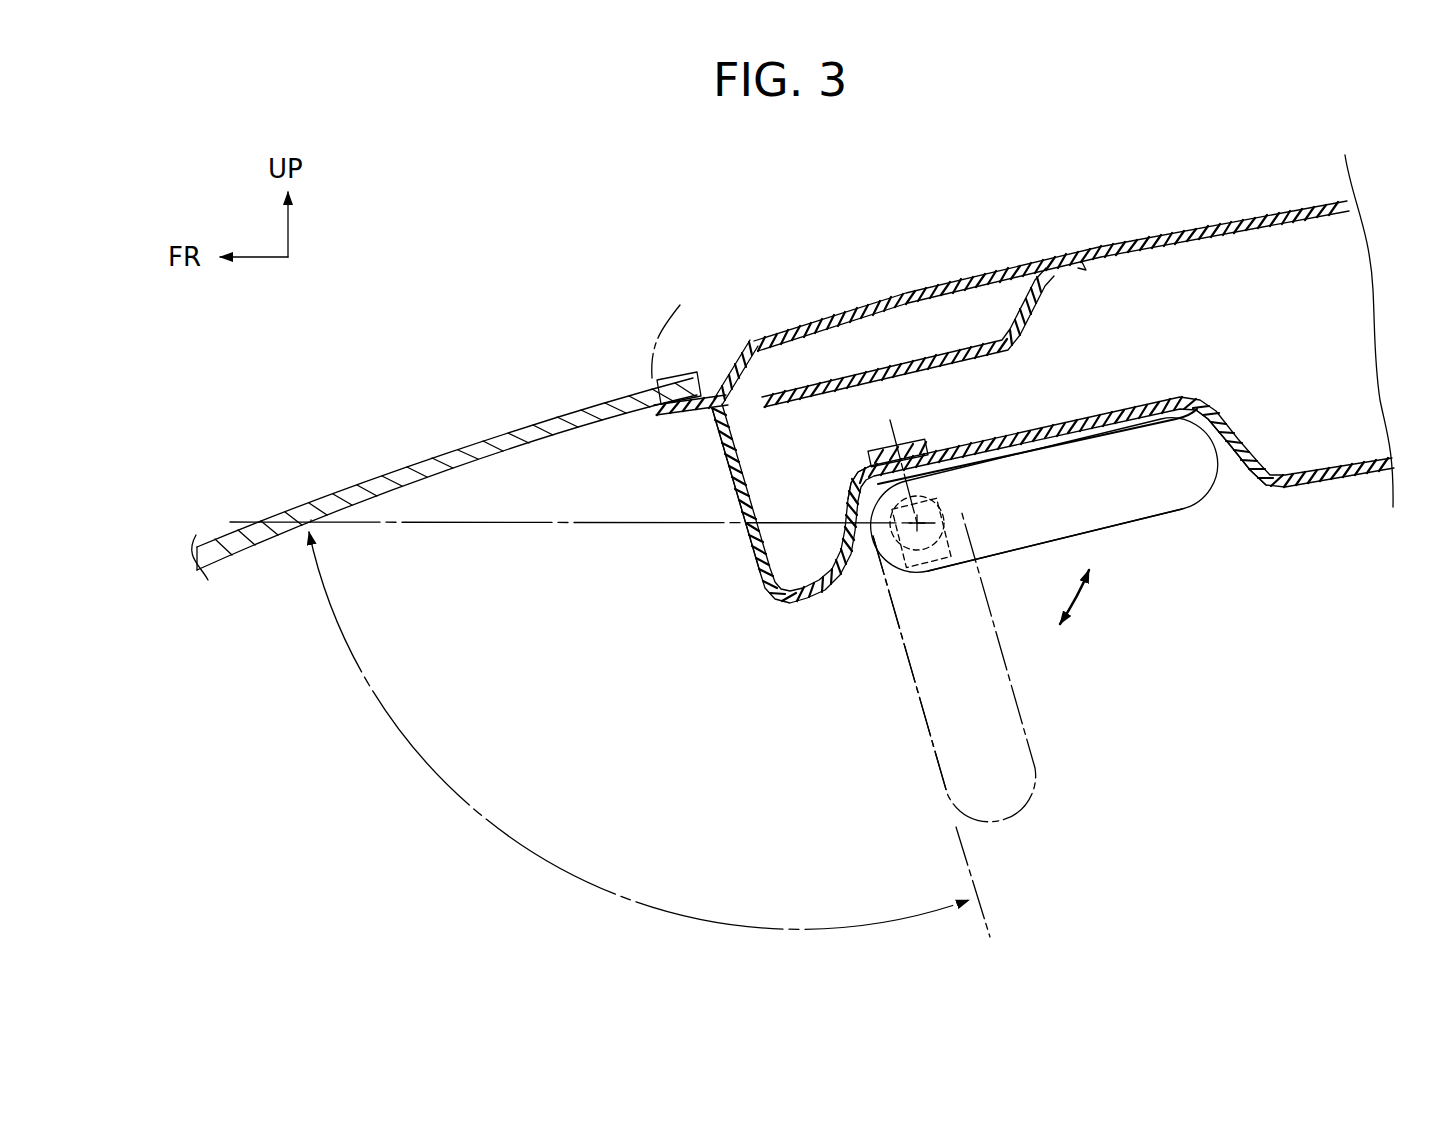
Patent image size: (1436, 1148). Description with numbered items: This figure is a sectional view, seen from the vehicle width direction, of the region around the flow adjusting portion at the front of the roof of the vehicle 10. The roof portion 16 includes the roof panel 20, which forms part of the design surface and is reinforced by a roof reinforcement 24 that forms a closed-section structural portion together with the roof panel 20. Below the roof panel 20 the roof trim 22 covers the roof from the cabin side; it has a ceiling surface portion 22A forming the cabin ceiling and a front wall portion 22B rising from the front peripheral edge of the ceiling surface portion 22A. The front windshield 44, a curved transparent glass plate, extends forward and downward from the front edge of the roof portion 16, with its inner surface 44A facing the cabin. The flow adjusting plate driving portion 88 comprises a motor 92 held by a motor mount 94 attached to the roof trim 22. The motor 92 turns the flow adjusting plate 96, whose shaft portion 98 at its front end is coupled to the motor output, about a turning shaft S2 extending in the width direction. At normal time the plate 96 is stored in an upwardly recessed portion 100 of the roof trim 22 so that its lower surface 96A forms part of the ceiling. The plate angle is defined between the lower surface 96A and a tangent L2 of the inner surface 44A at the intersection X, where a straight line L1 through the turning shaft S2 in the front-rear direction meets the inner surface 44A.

The vehicle 10 is at (1203, 168).
The roof portion 16 is at (923, 301).
The roof panel 20 is at (1268, 205).
The roof trim 22 is at (1357, 482).
The ceiling surface portion 22A is at (1300, 497).
The front wall portion 22B is at (758, 563).
The roof reinforcement 24 is at (1036, 318).
The front windshield 44 is at (466, 440).
The inner surface 44A is at (272, 542).
The flow adjusting plate driving portion 88 is at (964, 418).
The motor 92 is at (941, 528).
The motor mount 94 is at (927, 556).
The flow adjusting plate 96 is at (1186, 513).
The lower surface 96A is at (1152, 517).
The shaft portion 98 is at (852, 497).
The recessed portion 100 is at (1117, 440).
The straight line L1 is at (550, 522).
The tangent L2 is at (669, 327).
The intersection X is at (311, 519).
The turning shaft S2 is at (920, 522).